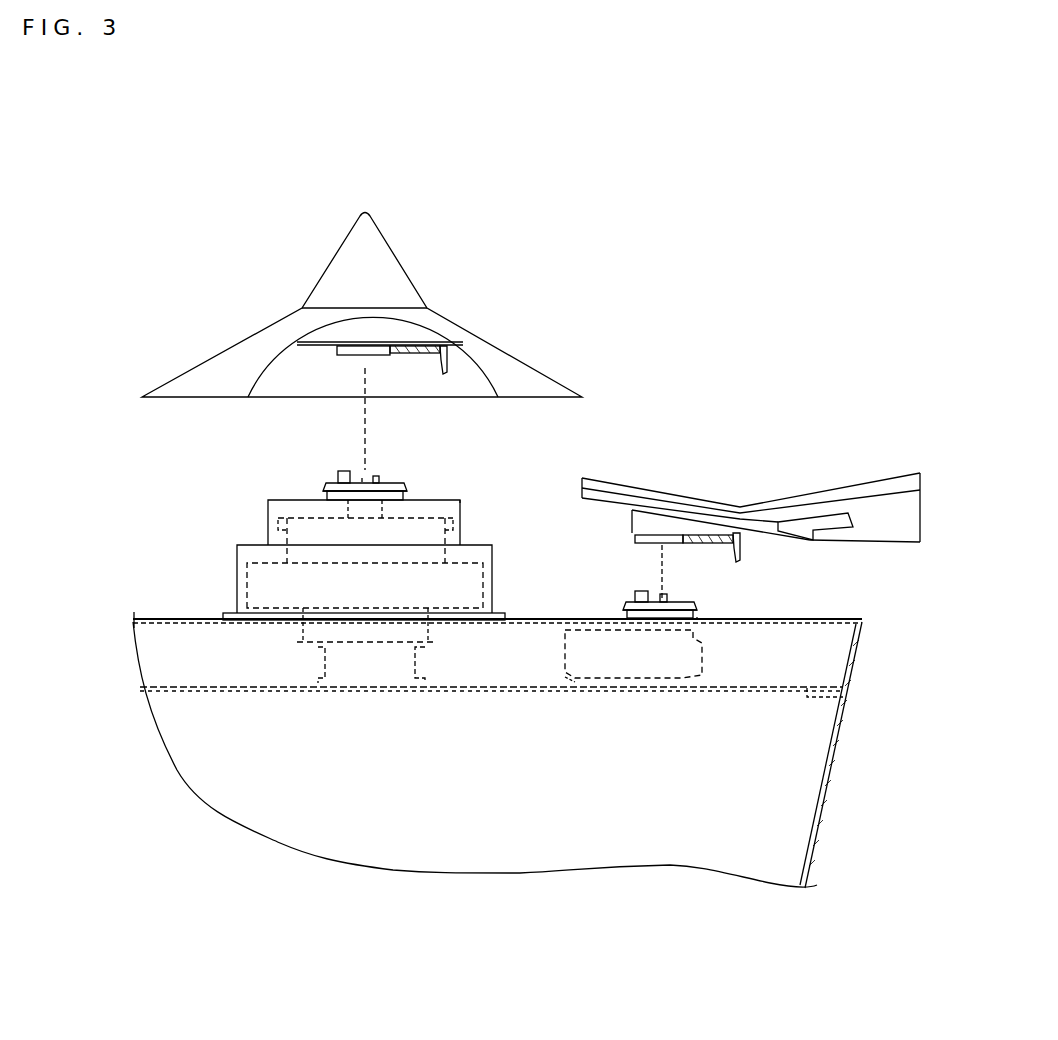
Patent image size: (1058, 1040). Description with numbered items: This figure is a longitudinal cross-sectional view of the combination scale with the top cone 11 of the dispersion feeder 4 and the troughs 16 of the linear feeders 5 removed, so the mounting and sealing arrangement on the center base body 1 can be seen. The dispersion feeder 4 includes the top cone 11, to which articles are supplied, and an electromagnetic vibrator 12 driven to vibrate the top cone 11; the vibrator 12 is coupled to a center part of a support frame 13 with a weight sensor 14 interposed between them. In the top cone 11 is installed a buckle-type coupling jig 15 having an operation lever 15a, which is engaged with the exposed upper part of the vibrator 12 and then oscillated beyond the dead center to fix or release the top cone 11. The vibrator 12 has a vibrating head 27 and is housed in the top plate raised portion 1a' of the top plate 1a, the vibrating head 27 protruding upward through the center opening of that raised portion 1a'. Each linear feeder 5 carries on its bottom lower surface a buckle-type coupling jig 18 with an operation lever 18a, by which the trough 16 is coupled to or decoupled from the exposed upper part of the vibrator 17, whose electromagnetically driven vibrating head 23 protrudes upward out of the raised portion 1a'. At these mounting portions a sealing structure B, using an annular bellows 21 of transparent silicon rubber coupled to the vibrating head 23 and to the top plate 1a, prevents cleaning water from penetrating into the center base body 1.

The center base body 1 is at (822, 813).
The top plate 1a is at (497, 599).
The top plate raised portion 1a' is at (611, 554).
The dispersion feeder 4 is at (485, 323).
The linear feeder 5 is at (698, 481).
The top cone 11 is at (268, 323).
The electromagnetic vibrator 12 is at (273, 530).
The support frame 13 is at (502, 688).
The weight sensor 14 is at (325, 662).
The buckle-type coupling jig 15 is at (385, 354).
The operation lever 15a is at (447, 370).
The trough 16 is at (858, 481).
The vibrator 17 is at (704, 638).
The buckle-type coupling jig 18 is at (660, 540).
The operation lever 18a is at (742, 556).
The annular bellows 21 is at (325, 485).
The vibrating head 23 is at (672, 597).
The vibrating head 27 is at (360, 480).
The sealing structure B is at (409, 493).